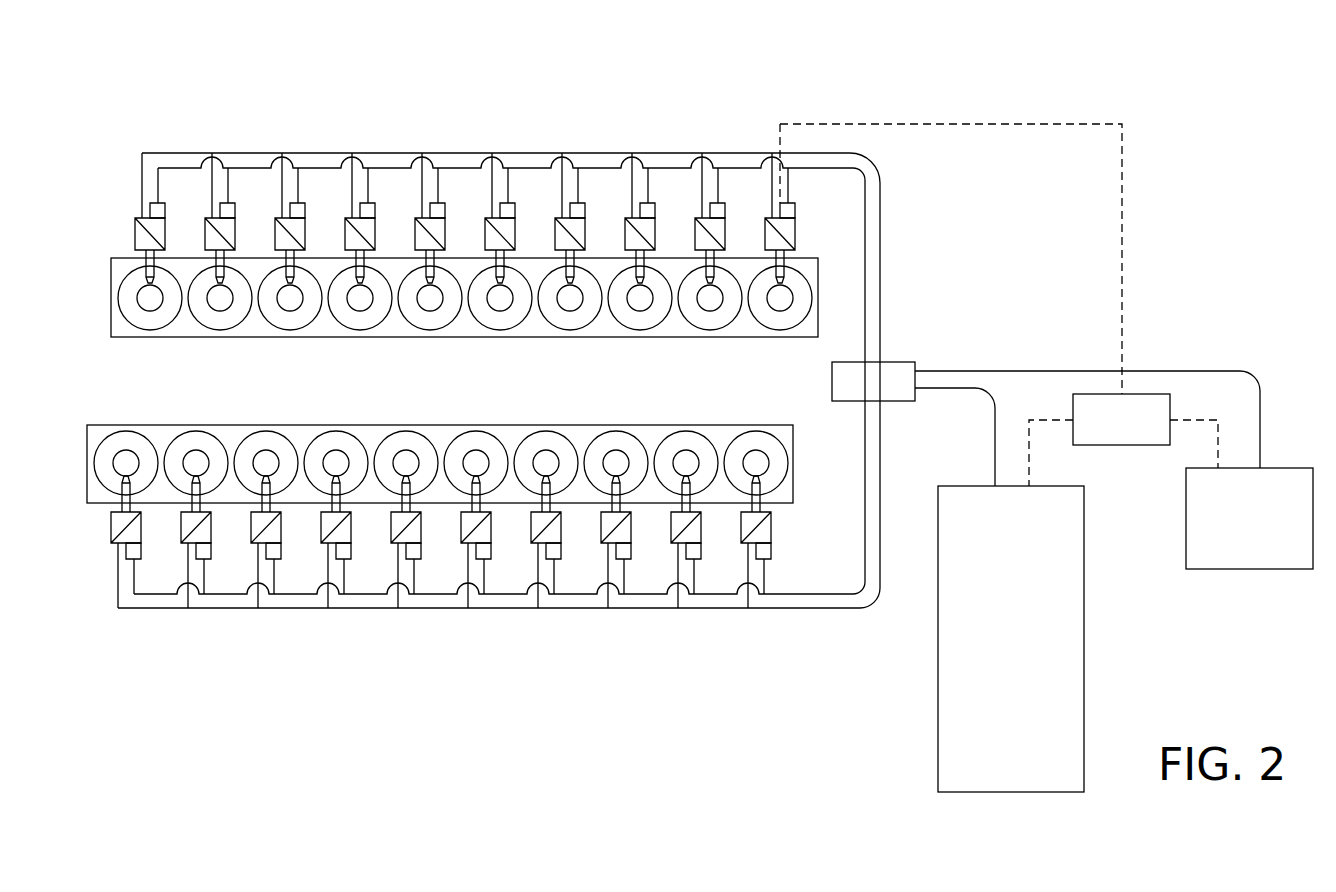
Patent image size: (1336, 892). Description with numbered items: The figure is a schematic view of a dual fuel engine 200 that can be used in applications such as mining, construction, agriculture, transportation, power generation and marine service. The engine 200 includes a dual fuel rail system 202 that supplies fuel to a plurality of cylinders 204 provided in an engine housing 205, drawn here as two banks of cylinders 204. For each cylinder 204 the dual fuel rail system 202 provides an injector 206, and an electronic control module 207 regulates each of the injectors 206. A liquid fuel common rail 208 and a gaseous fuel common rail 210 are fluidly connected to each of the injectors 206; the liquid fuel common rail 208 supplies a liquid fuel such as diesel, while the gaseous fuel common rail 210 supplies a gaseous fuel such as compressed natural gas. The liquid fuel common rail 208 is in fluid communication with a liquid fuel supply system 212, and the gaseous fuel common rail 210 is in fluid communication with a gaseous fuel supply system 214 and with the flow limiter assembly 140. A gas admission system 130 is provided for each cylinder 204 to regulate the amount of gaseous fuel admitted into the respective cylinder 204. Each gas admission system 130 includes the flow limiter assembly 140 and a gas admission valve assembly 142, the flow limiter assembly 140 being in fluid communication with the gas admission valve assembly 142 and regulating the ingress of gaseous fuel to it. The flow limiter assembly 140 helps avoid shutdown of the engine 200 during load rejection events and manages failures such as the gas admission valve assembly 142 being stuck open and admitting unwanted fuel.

The duel fuel engine 200 is at (1010, 90).
The dual fuel rail system 202 is at (156, 103).
The cylinder 204 is at (636, 322).
The engine housing 205 is at (762, 337).
The injector 206 is at (443, 297).
The electronic control module 207 is at (1101, 431).
The liquid fuel common rail 208 is at (527, 168).
The gaseous fuel common rail 210 is at (327, 153).
The liquid fuel supply system 212 is at (1241, 530).
The gaseous fuel supply system 214 is at (990, 641).
The gas admission system 130 is at (690, 193).
The flow limiter assembly 140 is at (718, 202).
The gas admission valve assembly 142 is at (795, 232).